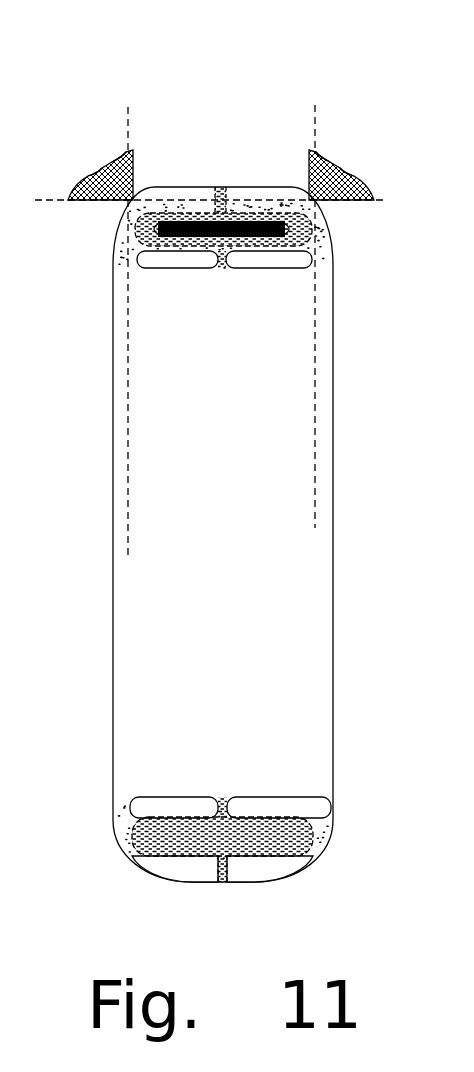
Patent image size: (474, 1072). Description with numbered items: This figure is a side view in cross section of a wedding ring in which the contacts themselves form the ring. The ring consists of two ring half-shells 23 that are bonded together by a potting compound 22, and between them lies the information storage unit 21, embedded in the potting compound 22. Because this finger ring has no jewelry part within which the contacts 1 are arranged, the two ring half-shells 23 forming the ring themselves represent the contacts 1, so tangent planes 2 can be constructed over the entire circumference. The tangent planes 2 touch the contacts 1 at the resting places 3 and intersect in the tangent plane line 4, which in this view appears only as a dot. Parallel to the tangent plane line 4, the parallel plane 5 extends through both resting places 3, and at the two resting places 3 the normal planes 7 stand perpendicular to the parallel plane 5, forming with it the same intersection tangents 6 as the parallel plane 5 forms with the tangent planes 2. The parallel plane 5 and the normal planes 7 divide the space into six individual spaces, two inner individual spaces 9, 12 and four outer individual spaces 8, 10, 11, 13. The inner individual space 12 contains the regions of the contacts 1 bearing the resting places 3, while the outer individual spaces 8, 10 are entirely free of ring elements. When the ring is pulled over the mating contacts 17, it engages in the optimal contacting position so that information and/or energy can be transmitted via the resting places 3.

The contacts 1 is at (282, 258).
The tangent planes 2 is at (80, 238).
The resting places 3 is at (85, 182).
The tangent plane line 4 is at (218, 135).
The parallel plane 5 is at (35, 203).
The intersection tangents 6 is at (105, 177).
The normal planes 7 is at (128, 107).
The outer individual space 8 is at (42, 56).
The inner individual space 9 is at (205, 29).
The outer individual space 10 is at (403, 29).
The outer individual space 11 is at (75, 479).
The inner individual space 12 is at (216, 479).
The outer individual space 13 is at (382, 479).
The mating contacts 17 is at (118, 157).
The information storage unit 21 is at (153, 250).
The potting compound 22 is at (307, 243).
The ring half-shells 23 is at (278, 566).